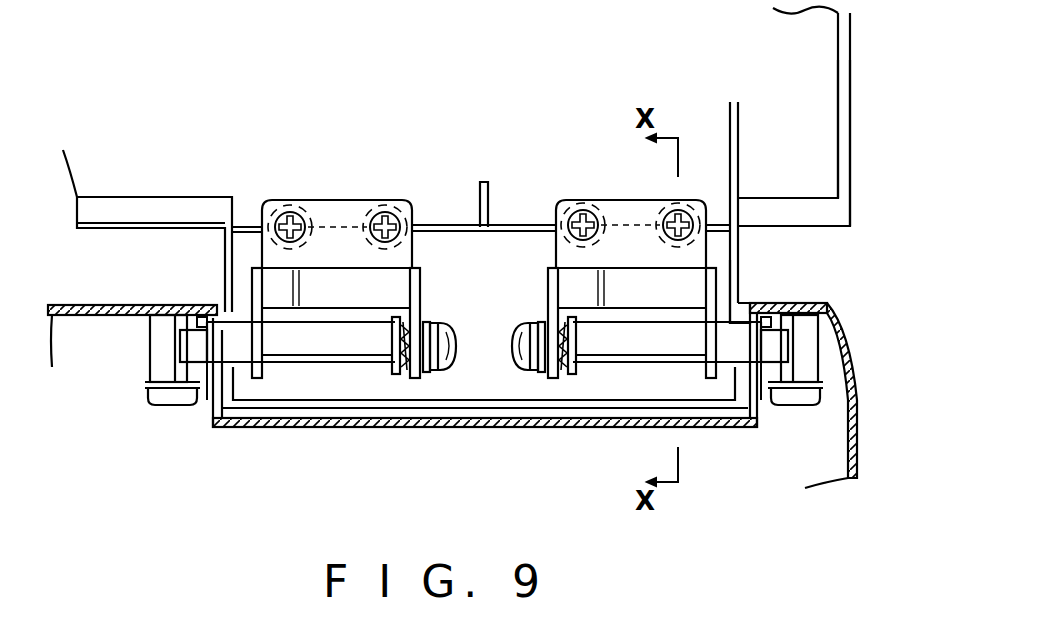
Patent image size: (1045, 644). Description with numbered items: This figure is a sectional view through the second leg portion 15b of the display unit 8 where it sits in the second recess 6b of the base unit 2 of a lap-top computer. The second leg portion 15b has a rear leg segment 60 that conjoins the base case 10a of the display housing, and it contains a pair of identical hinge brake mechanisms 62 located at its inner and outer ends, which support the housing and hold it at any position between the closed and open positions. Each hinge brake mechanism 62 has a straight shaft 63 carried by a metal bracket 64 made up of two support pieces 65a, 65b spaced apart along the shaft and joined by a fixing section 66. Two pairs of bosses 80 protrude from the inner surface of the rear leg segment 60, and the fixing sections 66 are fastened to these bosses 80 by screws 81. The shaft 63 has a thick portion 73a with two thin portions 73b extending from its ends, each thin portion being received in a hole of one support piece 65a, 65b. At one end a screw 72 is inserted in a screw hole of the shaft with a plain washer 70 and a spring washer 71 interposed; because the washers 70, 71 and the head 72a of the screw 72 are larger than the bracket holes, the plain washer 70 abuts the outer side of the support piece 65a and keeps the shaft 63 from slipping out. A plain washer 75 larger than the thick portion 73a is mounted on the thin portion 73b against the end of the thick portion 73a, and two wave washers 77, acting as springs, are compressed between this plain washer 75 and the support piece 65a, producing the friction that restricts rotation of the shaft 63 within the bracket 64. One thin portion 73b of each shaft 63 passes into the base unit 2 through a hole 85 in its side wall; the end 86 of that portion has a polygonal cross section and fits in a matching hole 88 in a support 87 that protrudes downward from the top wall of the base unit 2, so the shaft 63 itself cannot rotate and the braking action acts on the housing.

The base unit 2 is at (852, 398).
The display unit 8 is at (850, 44).
The base case 10a is at (828, 100).
The second leg portion 15b is at (225, 255).
The rear leg segment 60 is at (728, 285).
The hinge brake mechanism 62 is at (742, 225).
The shaft 63 is at (375, 405).
The bracket 64 is at (338, 207).
The support piece 65a is at (420, 282).
The support piece 65b is at (252, 285).
The fixing section 66 is at (352, 200).
The second recess 6b is at (298, 410).
The plain washer 70 is at (399, 320).
The spring washer 71 is at (442, 366).
The screw 72 is at (524, 334).
The head of screw 72a is at (517, 365).
The thick portion 73a is at (331, 352).
The thin portion 73b is at (215, 420).
The plain washer 75 is at (583, 338).
The wave washer 77 is at (405, 330).
The boss 80 is at (290, 205).
The screw 81 is at (282, 215).
The hole 85 is at (213, 368).
The end of thin portion 86 is at (183, 337).
The support 87 is at (150, 397).
The hole 88 is at (192, 352).